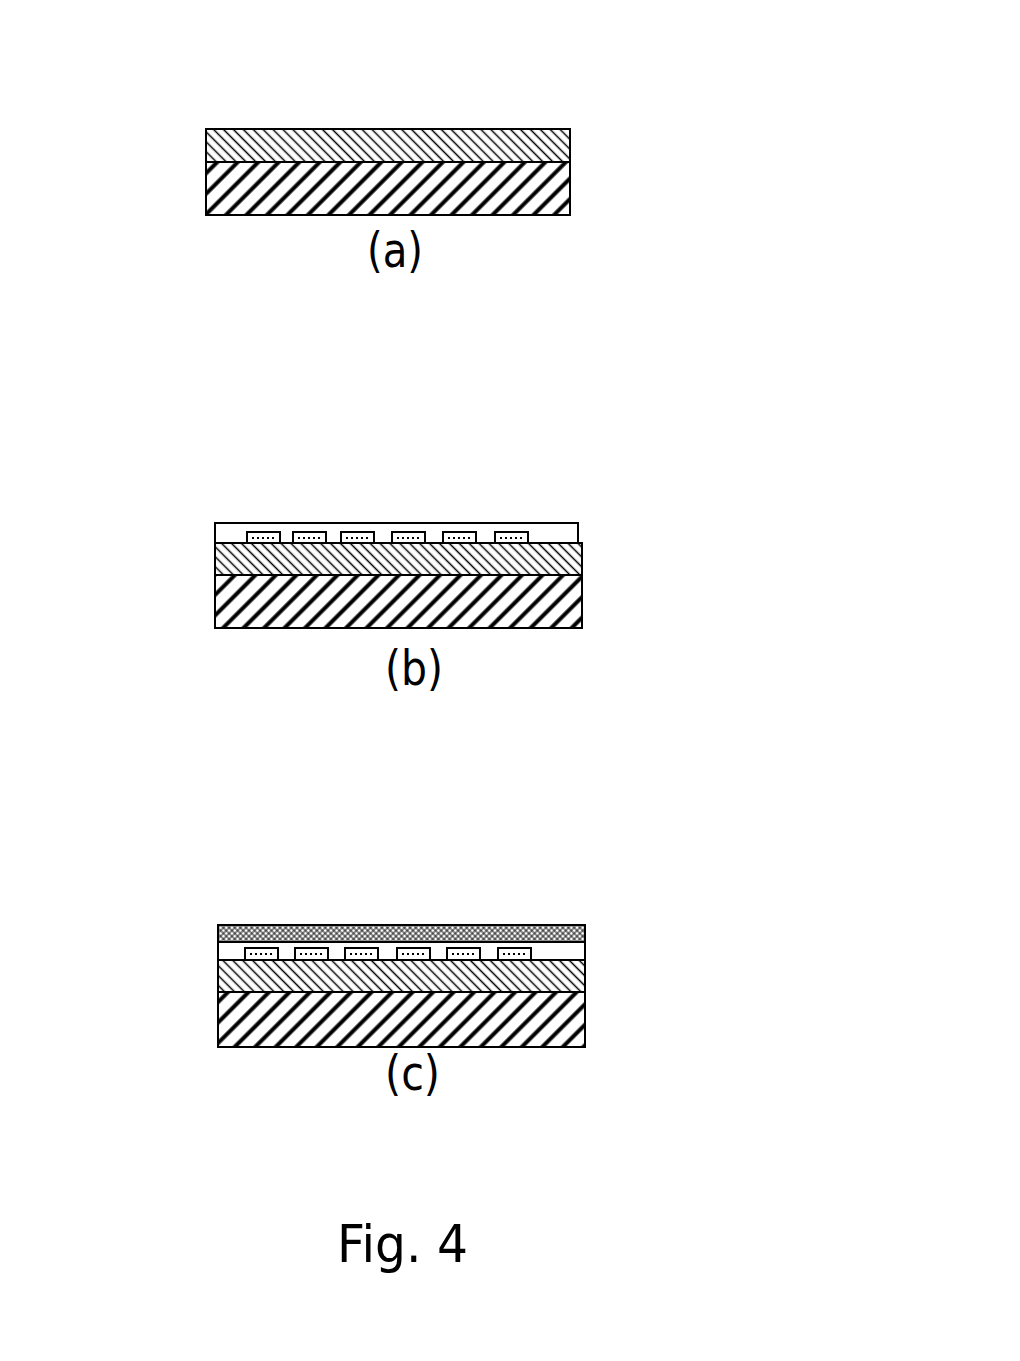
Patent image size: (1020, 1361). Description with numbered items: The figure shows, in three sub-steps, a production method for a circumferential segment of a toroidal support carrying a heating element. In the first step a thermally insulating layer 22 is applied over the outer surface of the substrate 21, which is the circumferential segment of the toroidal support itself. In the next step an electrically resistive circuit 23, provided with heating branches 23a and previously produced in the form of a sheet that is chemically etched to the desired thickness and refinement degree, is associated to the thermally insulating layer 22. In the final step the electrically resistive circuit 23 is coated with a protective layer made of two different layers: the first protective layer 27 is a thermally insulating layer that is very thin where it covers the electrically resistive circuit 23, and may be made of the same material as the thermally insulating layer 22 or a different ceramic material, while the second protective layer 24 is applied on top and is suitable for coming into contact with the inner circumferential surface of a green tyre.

The substrate 21 is at (530, 200).
The thermally insulating layer 22 is at (505, 135).
The electrically resistive circuit 23 is at (229, 526).
The heating branches 23a is at (312, 535).
The second protective layer 24 is at (308, 927).
The first protective layer 27 is at (265, 523).